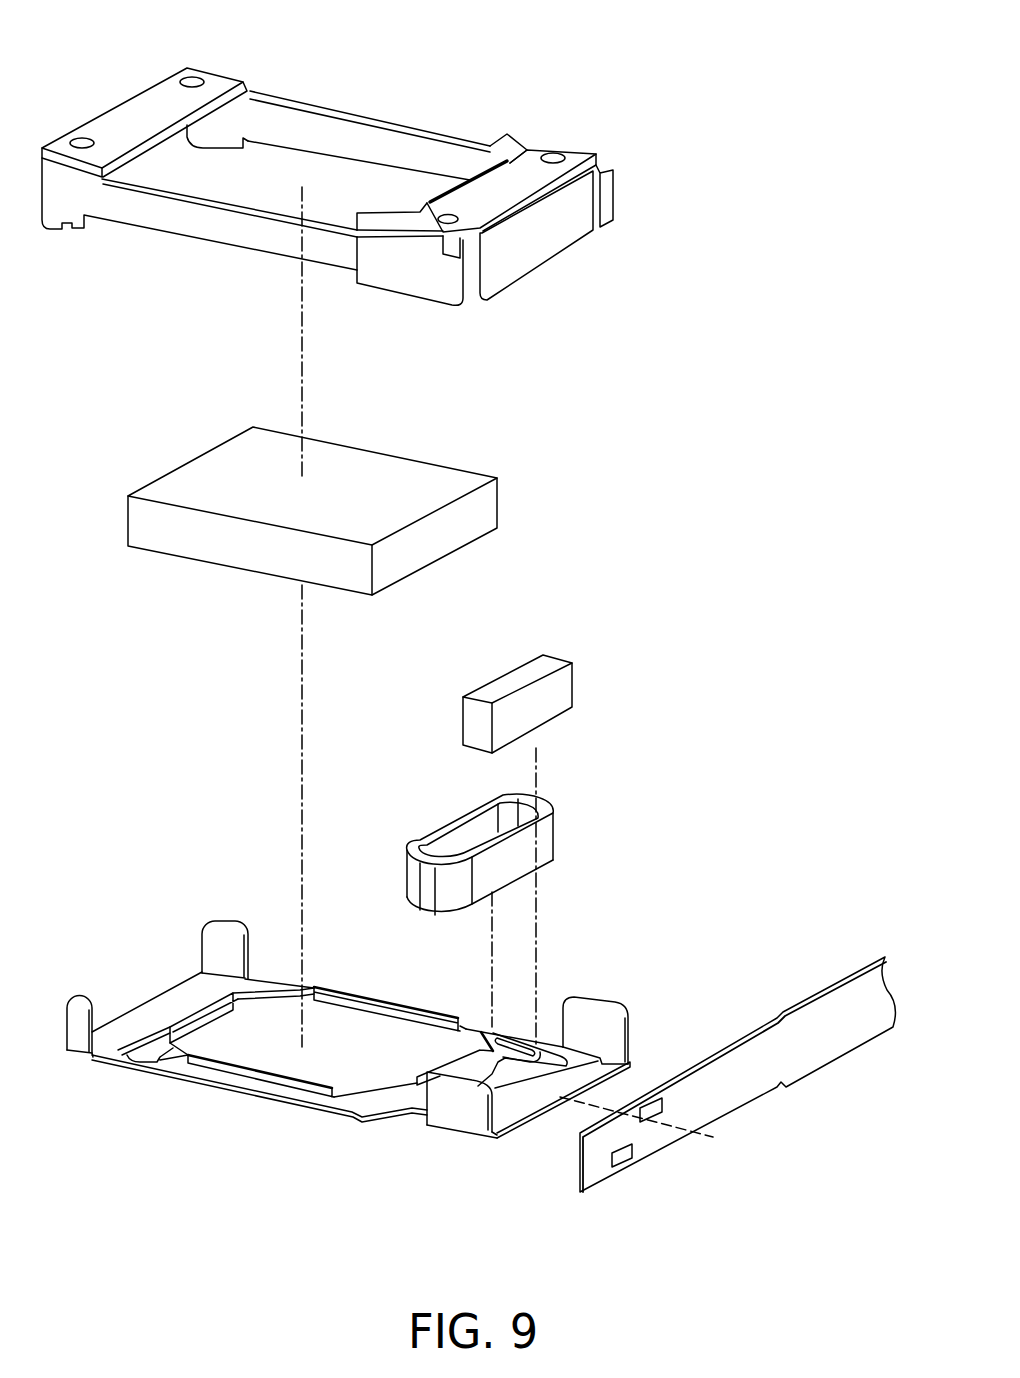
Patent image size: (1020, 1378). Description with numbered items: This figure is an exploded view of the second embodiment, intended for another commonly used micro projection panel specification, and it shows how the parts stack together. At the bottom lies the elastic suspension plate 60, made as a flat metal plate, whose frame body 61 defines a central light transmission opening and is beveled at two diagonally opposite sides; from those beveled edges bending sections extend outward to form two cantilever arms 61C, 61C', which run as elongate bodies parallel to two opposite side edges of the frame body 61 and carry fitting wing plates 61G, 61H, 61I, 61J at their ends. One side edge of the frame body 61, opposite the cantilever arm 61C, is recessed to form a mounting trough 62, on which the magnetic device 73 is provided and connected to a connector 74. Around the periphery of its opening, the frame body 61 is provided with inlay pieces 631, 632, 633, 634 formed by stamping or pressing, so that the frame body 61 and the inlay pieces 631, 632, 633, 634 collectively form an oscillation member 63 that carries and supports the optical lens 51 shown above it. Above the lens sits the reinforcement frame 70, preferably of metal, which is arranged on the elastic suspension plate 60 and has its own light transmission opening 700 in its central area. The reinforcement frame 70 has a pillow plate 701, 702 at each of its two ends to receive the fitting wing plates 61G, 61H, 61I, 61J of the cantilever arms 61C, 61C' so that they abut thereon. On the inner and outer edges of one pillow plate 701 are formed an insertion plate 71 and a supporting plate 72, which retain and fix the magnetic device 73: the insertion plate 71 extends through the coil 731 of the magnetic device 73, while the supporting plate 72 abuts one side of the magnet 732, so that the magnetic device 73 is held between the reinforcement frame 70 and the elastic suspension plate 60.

The reinforcement frame 70 is at (359, 110).
The light transmission opening 700 is at (225, 178).
The pillow plate 701 is at (533, 172).
The pillow plate 702 is at (120, 115).
The insertion plate 71 is at (452, 185).
The supporting plate 72 is at (544, 250).
The optical lens 51 is at (218, 468).
The magnetic device 73 is at (733, 638).
The coil 731 is at (548, 838).
The magnet 732 is at (565, 705).
The connector 74 is at (813, 1015).
The elastic suspension plate 60 is at (142, 1097).
The frame body 61 is at (225, 1088).
The cantilever arm 61C is at (546, 1130).
The cantilever arm 61C' is at (128, 987).
The fitting wing plate 61G is at (447, 1120).
The fitting wing plate 61H is at (598, 1013).
The fitting wing plate 61I is at (63, 1045).
The fitting wing plate 61J is at (222, 937).
The mounting trough 62 is at (507, 1072).
The oscillation member 63 is at (352, 1054).
The inlay piece 631 is at (372, 1007).
The inlay piece 632 is at (465, 1053).
The inlay piece 633 is at (272, 1082).
The inlay piece 634 is at (188, 1023).